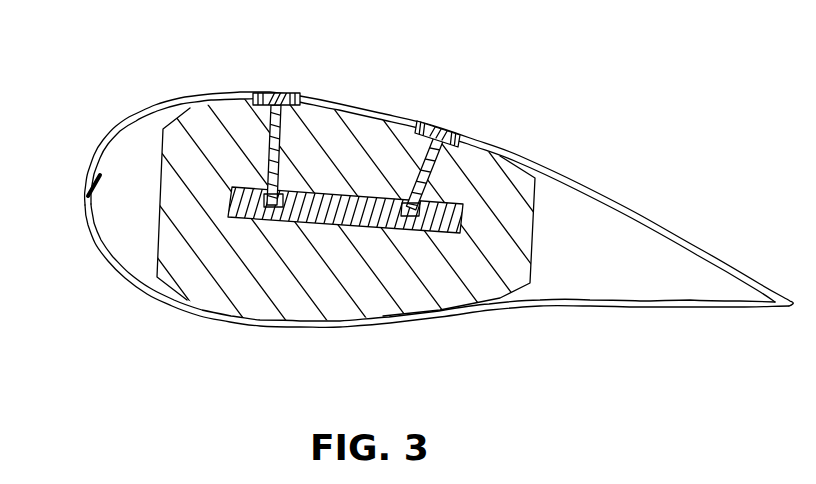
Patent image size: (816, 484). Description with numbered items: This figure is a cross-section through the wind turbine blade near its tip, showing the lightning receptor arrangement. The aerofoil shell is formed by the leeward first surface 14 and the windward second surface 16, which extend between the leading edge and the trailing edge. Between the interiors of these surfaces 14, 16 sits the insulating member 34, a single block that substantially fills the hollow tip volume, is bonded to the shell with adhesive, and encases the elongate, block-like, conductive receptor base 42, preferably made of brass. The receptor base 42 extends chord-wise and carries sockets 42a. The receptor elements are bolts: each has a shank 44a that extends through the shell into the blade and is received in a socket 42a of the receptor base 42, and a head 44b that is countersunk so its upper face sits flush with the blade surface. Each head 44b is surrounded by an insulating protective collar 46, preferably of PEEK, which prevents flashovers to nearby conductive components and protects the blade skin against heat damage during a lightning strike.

The first surface 14 is at (672, 231).
The second surface 16 is at (641, 305).
The insulating member 34 is at (513, 205).
The receptor base 42 is at (266, 218).
The sockets 42a is at (233, 198).
The shank 44a is at (266, 142).
The head 44b is at (276, 97).
The insulating protective collar 46 is at (262, 93).